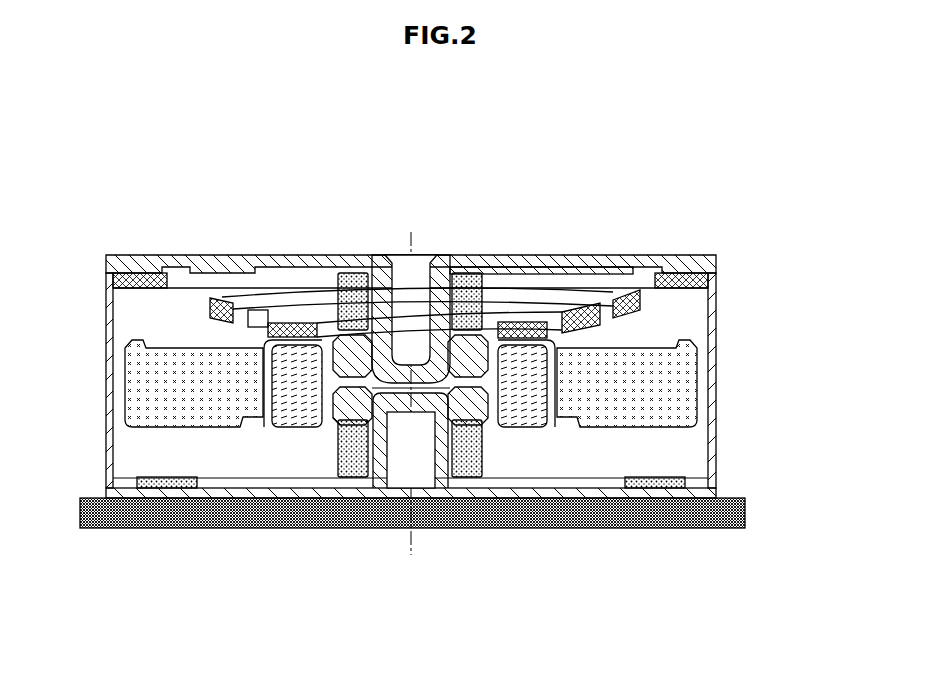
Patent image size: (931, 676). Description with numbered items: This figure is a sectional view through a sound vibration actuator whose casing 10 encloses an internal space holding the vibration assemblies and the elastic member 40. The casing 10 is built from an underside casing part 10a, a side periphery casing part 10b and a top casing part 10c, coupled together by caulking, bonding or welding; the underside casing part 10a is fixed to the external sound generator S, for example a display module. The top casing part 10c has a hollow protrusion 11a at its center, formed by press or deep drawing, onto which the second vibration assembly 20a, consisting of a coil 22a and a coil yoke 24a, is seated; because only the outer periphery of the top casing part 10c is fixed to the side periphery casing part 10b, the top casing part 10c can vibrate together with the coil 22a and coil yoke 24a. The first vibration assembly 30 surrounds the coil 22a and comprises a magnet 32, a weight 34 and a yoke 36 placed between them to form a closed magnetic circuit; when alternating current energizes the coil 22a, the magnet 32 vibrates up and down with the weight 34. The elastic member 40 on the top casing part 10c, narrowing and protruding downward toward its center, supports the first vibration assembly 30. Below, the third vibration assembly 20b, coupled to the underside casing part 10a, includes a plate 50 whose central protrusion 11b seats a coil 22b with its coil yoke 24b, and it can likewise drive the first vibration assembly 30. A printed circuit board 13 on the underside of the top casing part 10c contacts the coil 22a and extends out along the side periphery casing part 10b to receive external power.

The casing 10 is at (478, 344).
The underside casing part 10a is at (454, 487).
The side periphery casing part 10b is at (717, 372).
The top casing part 10c is at (230, 256).
The protrusion 11a is at (448, 256).
The protrusion 11b is at (445, 477).
The printed circuit board 13 is at (517, 268).
The second vibration assembly 20a is at (344, 262).
The third vibration assembly 20b is at (321, 513).
The coil 22a is at (367, 273).
The coil 22b is at (355, 473).
The coil yoke 24a is at (467, 192).
The coil yoke 24b is at (340, 412).
The first vibration assembly 30 is at (411, 489).
The magnet 32 is at (517, 417).
The weight 34 is at (635, 413).
The yoke 36 is at (555, 410).
The elastic member 40 is at (123, 281).
The plate 50 is at (172, 480).
The external sound generator S is at (725, 530).